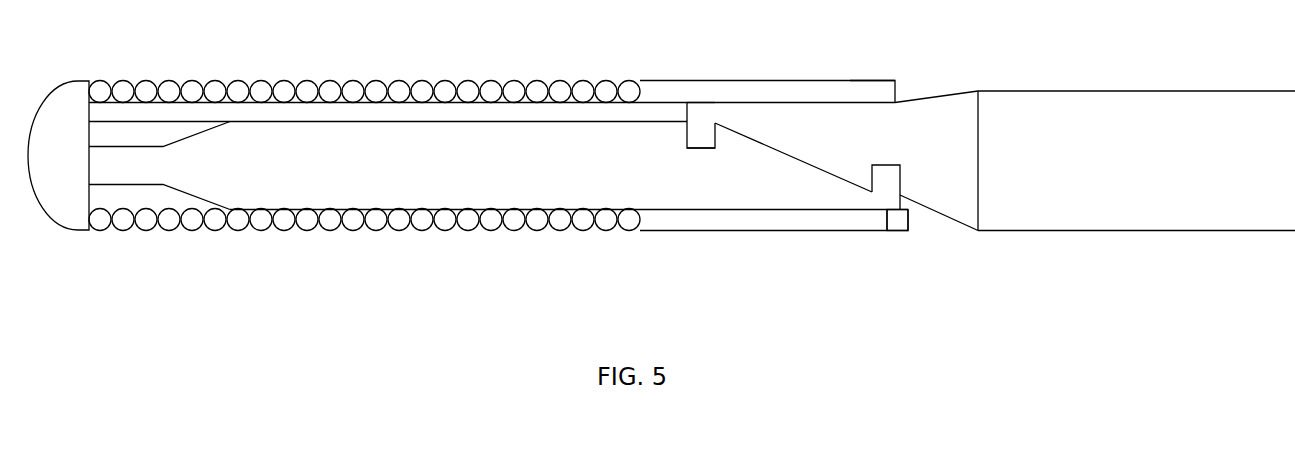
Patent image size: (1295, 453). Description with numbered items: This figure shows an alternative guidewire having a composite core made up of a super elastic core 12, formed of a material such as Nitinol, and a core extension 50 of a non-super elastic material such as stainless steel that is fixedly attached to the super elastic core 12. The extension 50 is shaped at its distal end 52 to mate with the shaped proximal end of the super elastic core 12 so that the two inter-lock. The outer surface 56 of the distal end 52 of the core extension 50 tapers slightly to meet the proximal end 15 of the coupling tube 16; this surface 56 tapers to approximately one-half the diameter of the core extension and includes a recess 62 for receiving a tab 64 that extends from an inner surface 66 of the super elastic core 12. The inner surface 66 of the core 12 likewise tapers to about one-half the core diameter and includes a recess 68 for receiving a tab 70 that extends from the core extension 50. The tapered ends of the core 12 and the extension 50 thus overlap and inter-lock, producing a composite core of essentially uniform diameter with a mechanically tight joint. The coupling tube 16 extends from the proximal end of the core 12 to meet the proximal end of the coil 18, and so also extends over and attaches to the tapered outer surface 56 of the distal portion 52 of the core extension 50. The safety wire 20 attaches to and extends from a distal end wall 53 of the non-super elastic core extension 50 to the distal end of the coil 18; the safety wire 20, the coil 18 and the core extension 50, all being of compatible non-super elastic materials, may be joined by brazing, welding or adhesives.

The super elastic core 12 is at (535, 170).
The proximal end of the coupling tube 15 is at (897, 102).
The coupling tube 16 is at (767, 92).
The coil 18 is at (302, 81).
The safety wire 20 is at (434, 108).
The core extension 50 is at (1183, 166).
The distal end of the core extension 52 is at (843, 92).
The distal end wall of the core extension 53 is at (686, 127).
The outer surface of the distal end of the core extension 56 is at (951, 91).
The recess 62 is at (882, 165).
The tab 64 is at (887, 200).
The inner surface of the super elastic core 66 is at (842, 177).
The recess 68 is at (700, 148).
The tab 70 is at (699, 115).